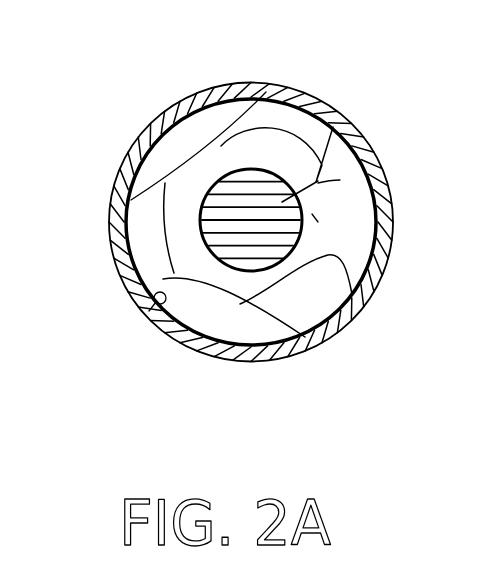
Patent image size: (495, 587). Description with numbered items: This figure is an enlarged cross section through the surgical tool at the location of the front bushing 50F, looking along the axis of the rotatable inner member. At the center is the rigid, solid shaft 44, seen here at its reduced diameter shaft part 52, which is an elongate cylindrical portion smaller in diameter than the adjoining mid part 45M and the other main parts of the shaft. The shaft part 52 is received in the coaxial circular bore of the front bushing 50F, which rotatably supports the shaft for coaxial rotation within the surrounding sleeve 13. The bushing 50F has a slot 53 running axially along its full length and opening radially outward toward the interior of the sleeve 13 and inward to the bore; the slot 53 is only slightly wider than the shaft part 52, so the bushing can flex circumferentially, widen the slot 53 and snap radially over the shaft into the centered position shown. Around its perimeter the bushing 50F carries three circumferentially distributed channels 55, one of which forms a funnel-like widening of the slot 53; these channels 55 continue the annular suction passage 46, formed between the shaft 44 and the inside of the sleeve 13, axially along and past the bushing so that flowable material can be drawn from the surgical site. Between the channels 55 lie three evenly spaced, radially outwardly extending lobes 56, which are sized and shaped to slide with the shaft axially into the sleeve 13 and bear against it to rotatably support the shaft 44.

The sleeve 13 is at (129, 287).
The shaft 44 is at (182, 171).
The mid part of the shaft 45M is at (316, 218).
The annular suction passage 46 is at (217, 350).
The front bushing 50F is at (220, 147).
The reduced diameter shaft part 52 is at (207, 193).
The slot 53 is at (326, 176).
The channels 55 is at (219, 142).
The lobes 56 is at (303, 100).